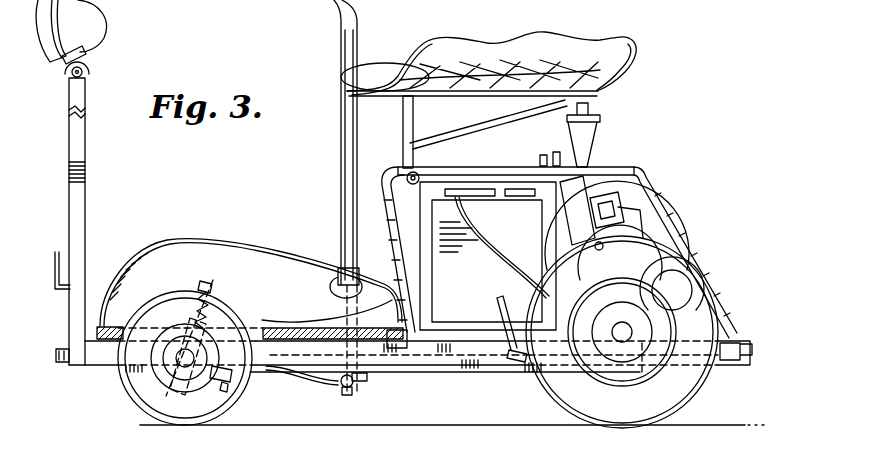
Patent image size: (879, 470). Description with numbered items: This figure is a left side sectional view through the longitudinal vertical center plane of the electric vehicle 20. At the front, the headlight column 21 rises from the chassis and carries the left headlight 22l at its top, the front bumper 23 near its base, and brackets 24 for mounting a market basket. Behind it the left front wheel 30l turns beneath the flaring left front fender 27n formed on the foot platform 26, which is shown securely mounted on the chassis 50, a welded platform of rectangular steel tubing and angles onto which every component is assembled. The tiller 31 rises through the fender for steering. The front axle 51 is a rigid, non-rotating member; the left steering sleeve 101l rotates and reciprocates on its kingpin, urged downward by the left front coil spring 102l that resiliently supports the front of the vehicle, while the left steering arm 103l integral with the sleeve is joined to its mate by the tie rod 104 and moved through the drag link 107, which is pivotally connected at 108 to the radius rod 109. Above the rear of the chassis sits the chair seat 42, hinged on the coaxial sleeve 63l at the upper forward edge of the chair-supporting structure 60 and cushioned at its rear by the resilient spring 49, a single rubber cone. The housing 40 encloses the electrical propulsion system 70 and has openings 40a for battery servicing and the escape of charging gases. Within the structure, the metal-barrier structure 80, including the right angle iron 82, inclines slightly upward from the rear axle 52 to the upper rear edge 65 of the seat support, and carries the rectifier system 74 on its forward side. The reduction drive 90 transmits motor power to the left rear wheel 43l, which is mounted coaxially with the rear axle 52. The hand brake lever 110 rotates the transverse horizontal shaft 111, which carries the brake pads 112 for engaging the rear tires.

The vehicle 20 is at (304, 45).
The headlight column 21 is at (72, 210).
The left headlight 22l is at (100, 40).
The front bumper 23 is at (60, 364).
The brackets 24 is at (55, 282).
The foot platform 26 is at (282, 378).
The front fender 27n is at (300, 252).
The left front wheel 30l is at (190, 428).
The tiller 31 is at (358, 34).
The housing 40 is at (684, 238).
The openings 40a is at (524, 168).
The chair seat 42 is at (613, 62).
The left rear wheel 43l is at (708, 392).
The resilient spring 49 is at (600, 131).
The chassis 50 is at (447, 362).
The front axle 51 is at (135, 398).
The rear axle 52 is at (620, 342).
The chair-supporting structure 60 is at (409, 350).
The left sleeve 63l is at (422, 172).
The upper rear edge 65 is at (606, 182).
The electrical propulsion system 70 is at (464, 374).
The rectifier system 74 is at (567, 232).
The metal-barrier structure 80 is at (628, 200).
The right angle iron 82 is at (600, 250).
The reduction drive 90 is at (650, 215).
The left steering sleeve 101l is at (236, 305).
The left front coil spring 102l is at (232, 290).
The left steering arm 103l is at (230, 400).
The tie rod 104 is at (211, 356).
The drag link 107 is at (302, 386).
The pivotal connection 108 is at (352, 396).
The radius rod 109 is at (366, 380).
The hand brake lever 110 is at (498, 306).
The transverse horizontal shaft 111 is at (519, 362).
The brake pads 112 is at (502, 247).